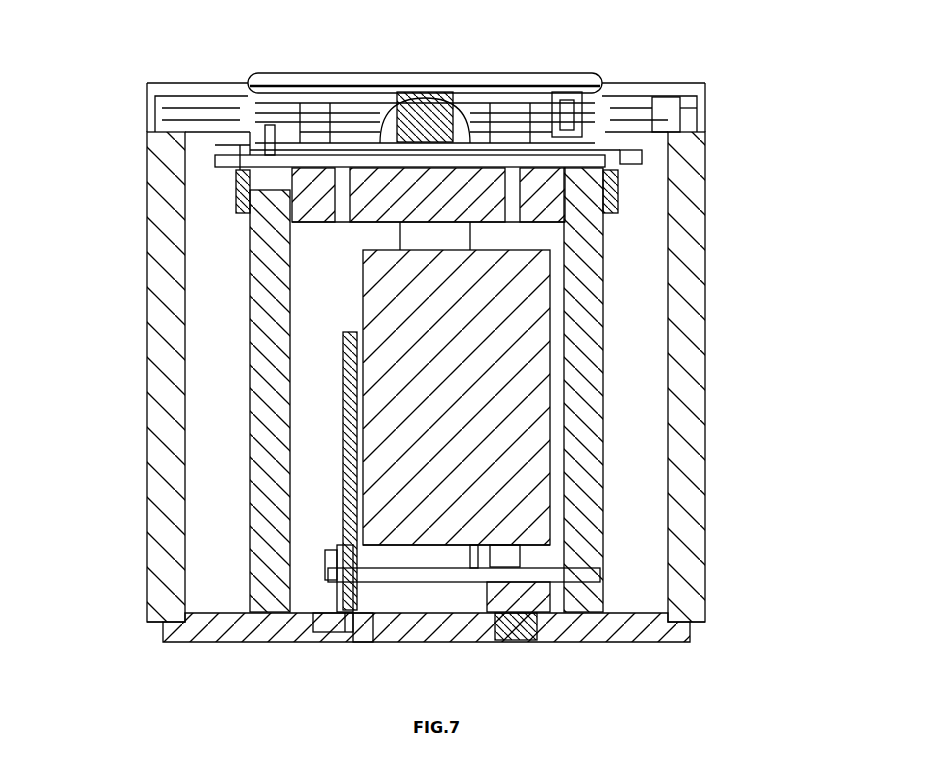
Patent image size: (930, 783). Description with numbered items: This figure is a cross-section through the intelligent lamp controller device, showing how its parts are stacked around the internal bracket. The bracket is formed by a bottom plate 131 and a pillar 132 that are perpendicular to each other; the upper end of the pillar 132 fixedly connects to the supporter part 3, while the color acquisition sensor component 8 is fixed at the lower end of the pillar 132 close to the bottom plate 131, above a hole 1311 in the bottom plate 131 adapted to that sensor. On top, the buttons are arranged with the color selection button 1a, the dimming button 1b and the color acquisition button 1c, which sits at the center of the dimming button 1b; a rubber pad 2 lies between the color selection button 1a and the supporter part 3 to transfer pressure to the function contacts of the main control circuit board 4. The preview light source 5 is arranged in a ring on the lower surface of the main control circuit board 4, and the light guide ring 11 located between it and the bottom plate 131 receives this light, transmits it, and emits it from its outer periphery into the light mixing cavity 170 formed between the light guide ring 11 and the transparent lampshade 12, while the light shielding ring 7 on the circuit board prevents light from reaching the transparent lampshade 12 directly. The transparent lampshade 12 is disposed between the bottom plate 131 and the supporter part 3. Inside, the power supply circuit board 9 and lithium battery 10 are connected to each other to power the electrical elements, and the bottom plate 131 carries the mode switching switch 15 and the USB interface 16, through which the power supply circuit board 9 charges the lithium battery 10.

The color selection button 1a is at (426, 52).
The dimming button 1b is at (593, 75).
The color acquisition button 1c is at (425, 78).
The rubber pad 2 is at (476, 82).
The supporter part 3 is at (480, 102).
The main control circuit board 4 is at (491, 147).
The preview light source 5 is at (506, 173).
The light shielding ring 7 is at (517, 206).
The color acquisition sensor component 8 is at (561, 570).
The power supply circuit board 9 is at (198, 471).
The lithium battery 10 is at (586, 397).
The light guide ring 11 is at (529, 390).
The transparent lampshade 12 is at (478, 352).
The mode switching switch 15 is at (558, 650).
The USB interface 16 is at (292, 616).
The bottom plate 131 is at (474, 650).
The hole 1311 is at (440, 650).
The pillar 132 is at (291, 252).
The light mixing cavity 170 is at (711, 413).